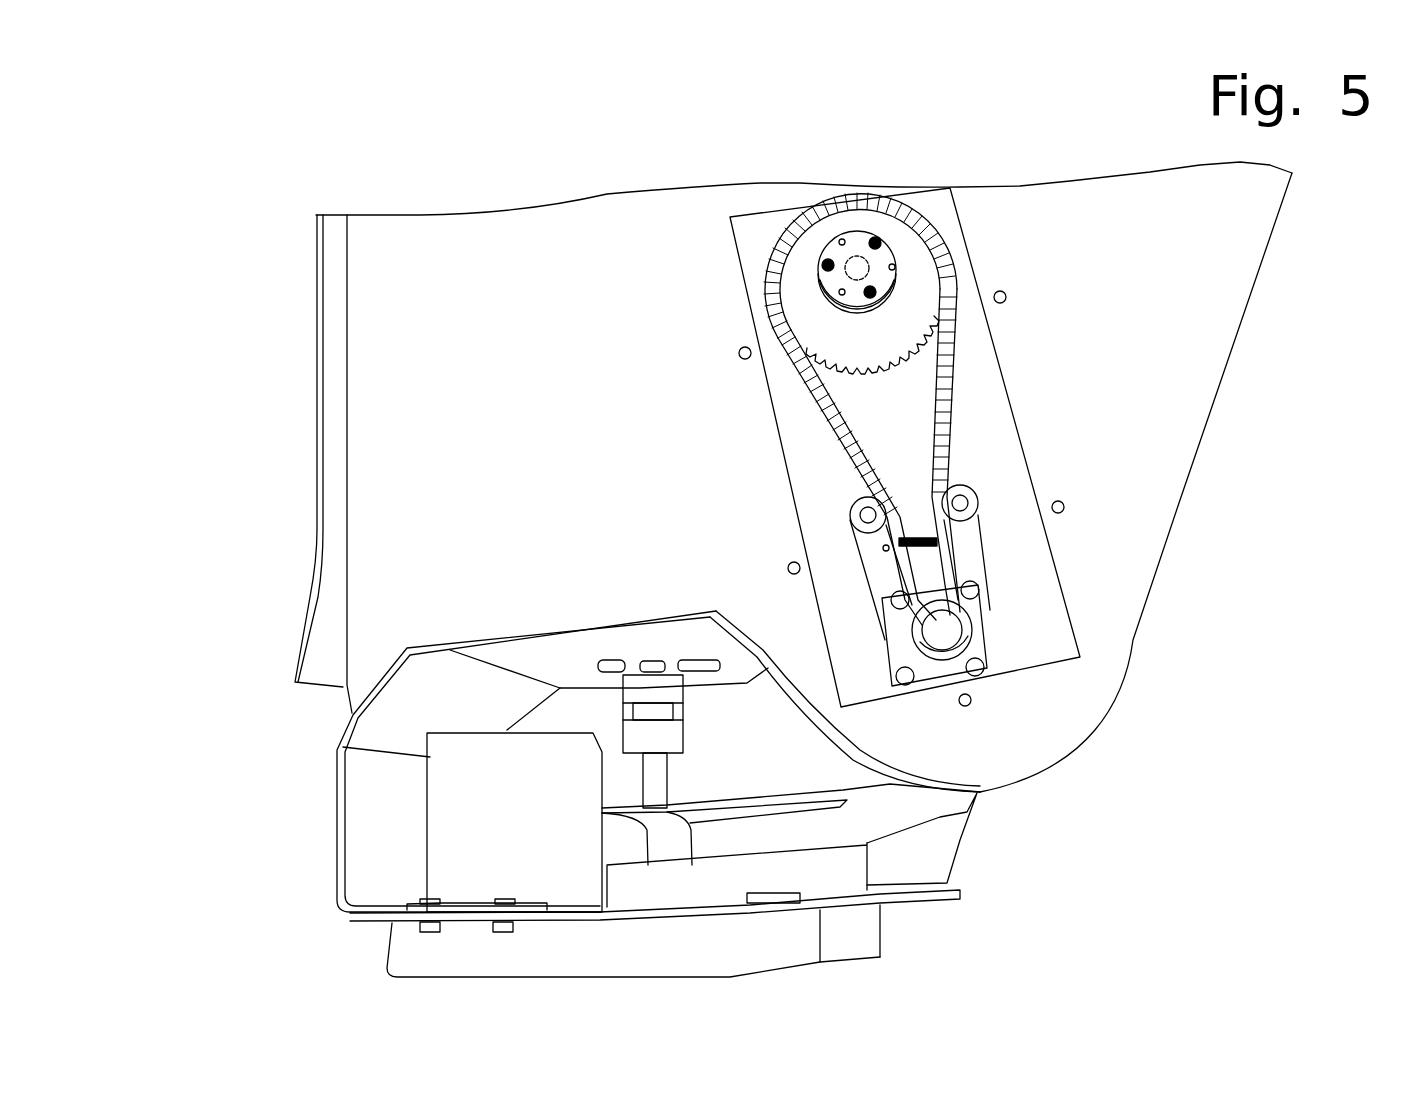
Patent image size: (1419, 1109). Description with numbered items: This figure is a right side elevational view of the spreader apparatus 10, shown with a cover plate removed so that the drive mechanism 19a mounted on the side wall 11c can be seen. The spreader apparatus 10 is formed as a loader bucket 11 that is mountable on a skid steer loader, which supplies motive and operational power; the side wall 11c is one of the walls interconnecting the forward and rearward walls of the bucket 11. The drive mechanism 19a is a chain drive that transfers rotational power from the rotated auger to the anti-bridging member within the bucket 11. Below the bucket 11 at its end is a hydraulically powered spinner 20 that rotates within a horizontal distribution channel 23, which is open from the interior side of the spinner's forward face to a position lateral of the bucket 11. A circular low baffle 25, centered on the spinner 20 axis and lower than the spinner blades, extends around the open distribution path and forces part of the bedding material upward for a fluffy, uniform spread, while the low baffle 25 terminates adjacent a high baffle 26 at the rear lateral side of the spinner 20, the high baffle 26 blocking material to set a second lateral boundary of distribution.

The spreader apparatus 10 is at (334, 158).
The loader bucket 11 is at (1138, 373).
The side wall 11c is at (607, 240).
The drive mechanism 19a is at (955, 565).
The spinner 20 is at (787, 842).
The distribution channel 23 is at (993, 833).
The low baffle 25 is at (795, 878).
The high baffle 26 is at (475, 828).